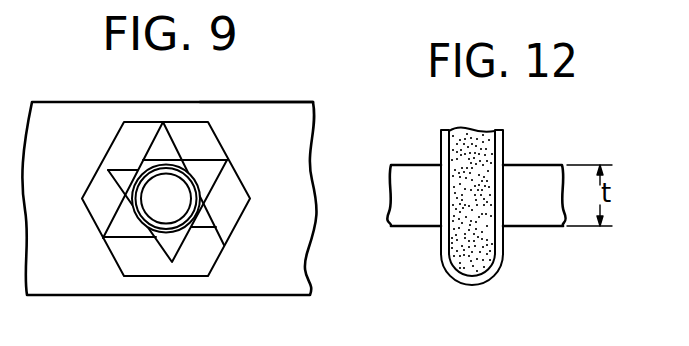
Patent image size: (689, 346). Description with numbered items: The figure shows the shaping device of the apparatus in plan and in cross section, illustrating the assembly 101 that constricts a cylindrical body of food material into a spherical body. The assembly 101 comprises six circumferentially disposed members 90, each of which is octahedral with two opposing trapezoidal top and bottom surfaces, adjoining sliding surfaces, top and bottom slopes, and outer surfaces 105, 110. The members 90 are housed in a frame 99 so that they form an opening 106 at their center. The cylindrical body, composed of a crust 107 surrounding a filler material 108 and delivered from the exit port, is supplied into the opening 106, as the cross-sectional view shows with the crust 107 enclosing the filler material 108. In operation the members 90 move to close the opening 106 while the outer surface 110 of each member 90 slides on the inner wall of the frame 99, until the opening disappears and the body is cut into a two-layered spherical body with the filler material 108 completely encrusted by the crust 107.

In FIG. 9, the member 90 is at (117, 157).
In FIG. 12, the member 90 is at (533, 212).
In FIG. 9, the frame 99 is at (275, 118).
In FIG. 9, the assembly 101 is at (240, 169).
In FIG. 9, the outer surface 105 is at (103, 142).
In FIG. 9, the opening 106 is at (148, 233).
In FIG. 9, the crust 107 is at (180, 230).
In FIG. 12, the crust 107 is at (503, 142).
In FIG. 9, the filler material 108 is at (177, 200).
In FIG. 12, the filler material 108 is at (482, 129).
In FIG. 9, the outer surface 110 is at (222, 145).